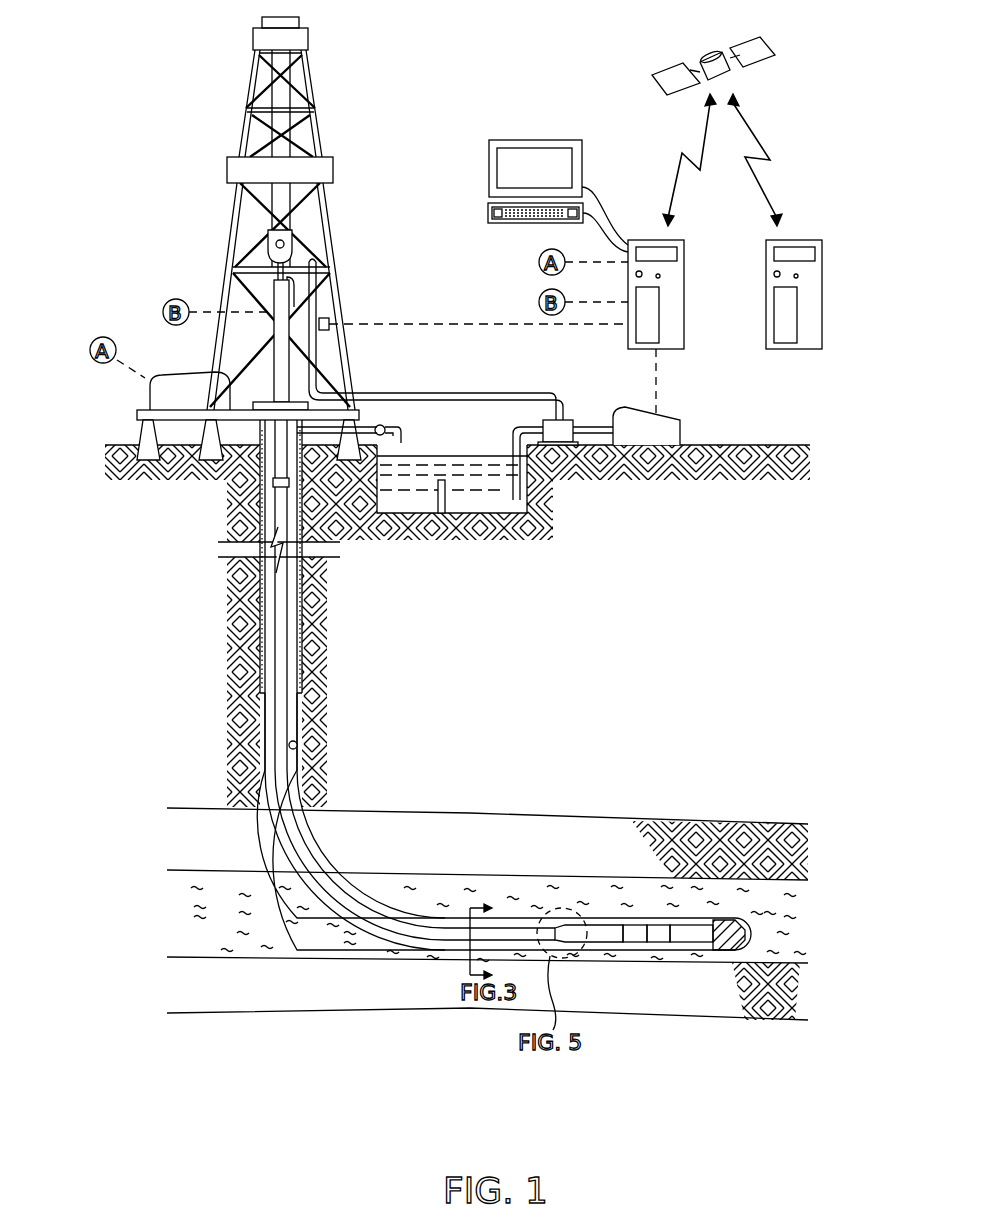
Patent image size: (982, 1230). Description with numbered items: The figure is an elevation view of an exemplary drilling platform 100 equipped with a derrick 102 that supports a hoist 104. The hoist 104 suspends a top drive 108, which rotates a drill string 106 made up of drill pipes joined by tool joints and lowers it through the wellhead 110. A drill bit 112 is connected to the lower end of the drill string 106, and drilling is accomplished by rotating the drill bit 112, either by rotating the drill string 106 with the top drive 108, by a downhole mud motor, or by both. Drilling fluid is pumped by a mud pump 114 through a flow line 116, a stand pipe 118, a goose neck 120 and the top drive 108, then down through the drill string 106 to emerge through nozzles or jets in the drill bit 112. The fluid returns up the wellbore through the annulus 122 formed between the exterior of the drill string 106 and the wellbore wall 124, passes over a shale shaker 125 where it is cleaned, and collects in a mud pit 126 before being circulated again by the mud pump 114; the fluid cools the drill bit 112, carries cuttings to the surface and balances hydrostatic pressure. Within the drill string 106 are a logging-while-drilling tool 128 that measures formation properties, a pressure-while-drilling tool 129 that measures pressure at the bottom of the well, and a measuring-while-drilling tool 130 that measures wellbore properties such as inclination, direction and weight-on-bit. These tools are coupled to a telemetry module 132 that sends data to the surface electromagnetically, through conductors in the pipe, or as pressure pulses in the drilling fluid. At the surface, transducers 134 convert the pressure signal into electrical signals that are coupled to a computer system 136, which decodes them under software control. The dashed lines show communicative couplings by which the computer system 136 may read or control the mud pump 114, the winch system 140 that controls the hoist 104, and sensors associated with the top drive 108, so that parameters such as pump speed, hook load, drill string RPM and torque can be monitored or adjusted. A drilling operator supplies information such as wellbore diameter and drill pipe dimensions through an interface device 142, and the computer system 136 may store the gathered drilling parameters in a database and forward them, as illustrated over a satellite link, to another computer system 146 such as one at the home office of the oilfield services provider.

The drilling platform 100 is at (137, 412).
The derrick 102 is at (310, 76).
The hoist 104 is at (270, 234).
The drill string 106 is at (517, 935).
The top drive 108 is at (280, 300).
The wellhead 110 is at (293, 400).
The drill bit 112 is at (733, 915).
The mud pump 114 is at (683, 412).
The flow line 116 is at (535, 393).
The stand pipe 118 is at (320, 300).
The goose neck 120 is at (312, 250).
The annulus 122 is at (320, 847).
The wellbore wall 124 is at (297, 745).
The shale shaker 125 is at (393, 428).
The mud pit 126 is at (487, 503).
The logging-while-drilling tool 128 is at (633, 942).
The pressure-while-drilling tool 129 is at (657, 925).
The measuring-while-drilling tool 130 is at (688, 942).
The telemetry module 132 is at (598, 935).
The transducers 134 is at (330, 322).
The computer system 136 is at (643, 240).
The winch system 140 is at (168, 377).
The interface device 142 is at (570, 140).
The computer system 146 is at (790, 240).